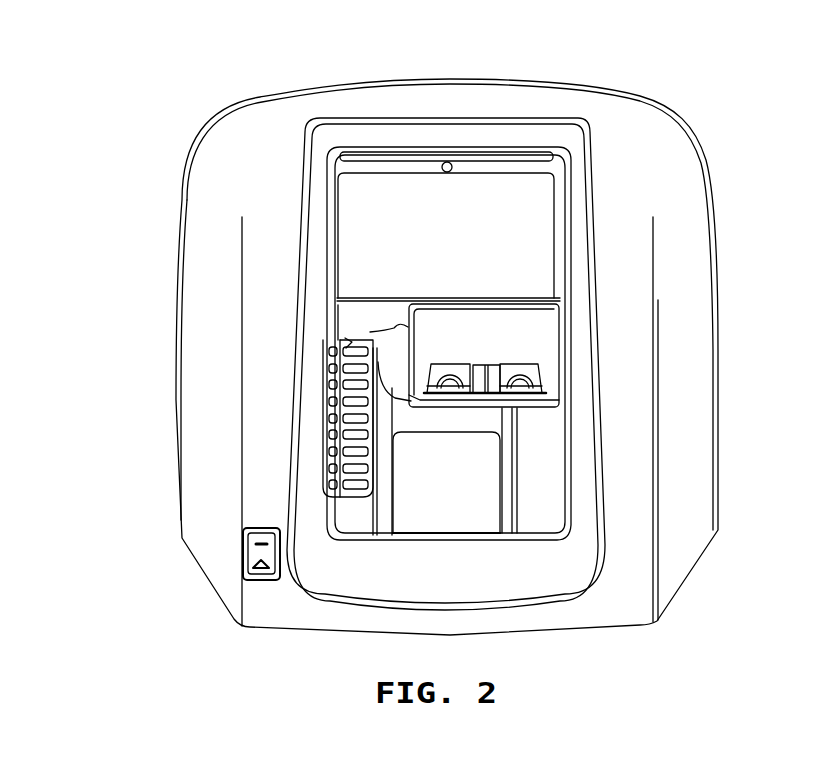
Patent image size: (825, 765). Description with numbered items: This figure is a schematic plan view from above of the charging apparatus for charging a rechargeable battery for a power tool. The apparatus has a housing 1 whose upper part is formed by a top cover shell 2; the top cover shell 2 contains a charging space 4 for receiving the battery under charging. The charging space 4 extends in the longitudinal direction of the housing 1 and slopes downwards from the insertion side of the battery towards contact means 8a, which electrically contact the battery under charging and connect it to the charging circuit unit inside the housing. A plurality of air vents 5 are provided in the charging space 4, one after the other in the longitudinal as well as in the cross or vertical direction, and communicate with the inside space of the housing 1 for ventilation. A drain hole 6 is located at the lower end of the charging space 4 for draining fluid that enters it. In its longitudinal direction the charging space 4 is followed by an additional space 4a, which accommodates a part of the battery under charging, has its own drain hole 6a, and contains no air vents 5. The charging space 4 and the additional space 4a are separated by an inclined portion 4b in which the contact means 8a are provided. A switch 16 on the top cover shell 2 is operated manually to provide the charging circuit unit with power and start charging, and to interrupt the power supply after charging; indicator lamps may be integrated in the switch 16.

The housing 1 is at (706, 104).
The top cover shell 2 is at (695, 287).
The charging space 4 is at (417, 517).
The additional space 4a is at (355, 213).
The inclined portion 4b is at (355, 313).
The air vents 5 is at (333, 365).
The drain hole 6 is at (370, 332).
The drain hole 6a is at (447, 162).
The contact means 8a is at (543, 370).
The switch 16 is at (253, 554).